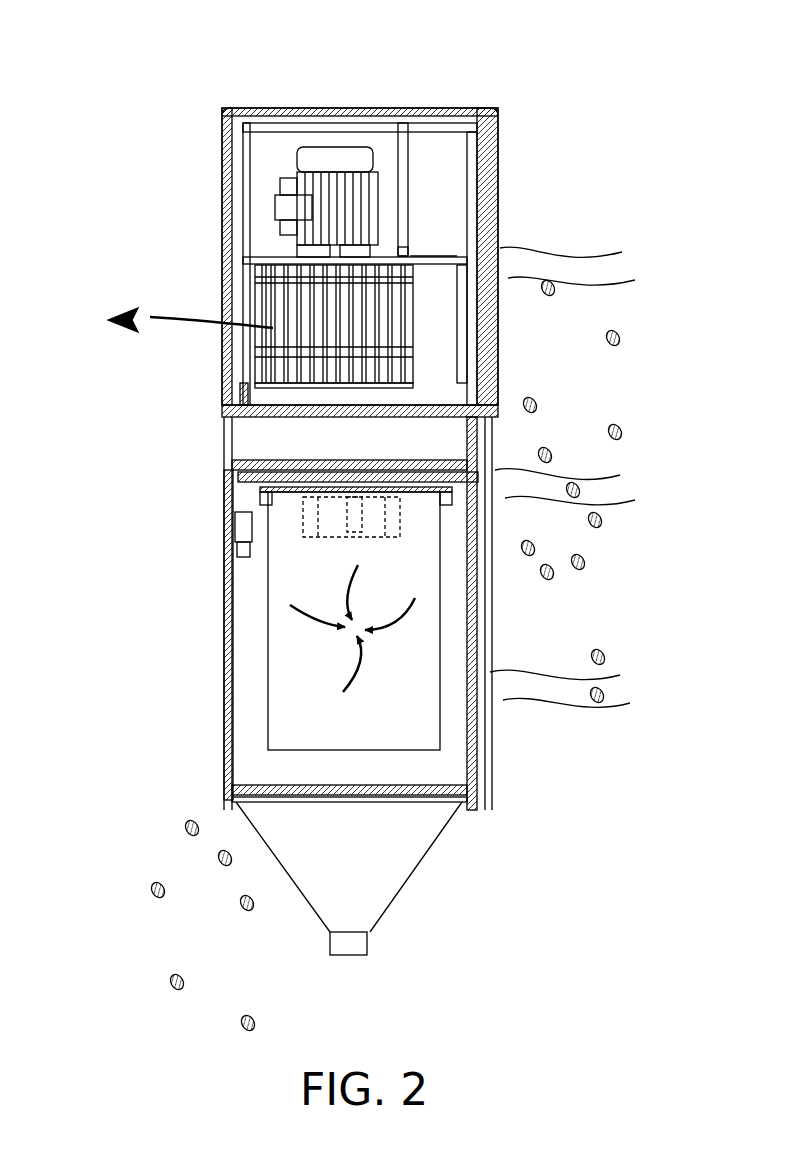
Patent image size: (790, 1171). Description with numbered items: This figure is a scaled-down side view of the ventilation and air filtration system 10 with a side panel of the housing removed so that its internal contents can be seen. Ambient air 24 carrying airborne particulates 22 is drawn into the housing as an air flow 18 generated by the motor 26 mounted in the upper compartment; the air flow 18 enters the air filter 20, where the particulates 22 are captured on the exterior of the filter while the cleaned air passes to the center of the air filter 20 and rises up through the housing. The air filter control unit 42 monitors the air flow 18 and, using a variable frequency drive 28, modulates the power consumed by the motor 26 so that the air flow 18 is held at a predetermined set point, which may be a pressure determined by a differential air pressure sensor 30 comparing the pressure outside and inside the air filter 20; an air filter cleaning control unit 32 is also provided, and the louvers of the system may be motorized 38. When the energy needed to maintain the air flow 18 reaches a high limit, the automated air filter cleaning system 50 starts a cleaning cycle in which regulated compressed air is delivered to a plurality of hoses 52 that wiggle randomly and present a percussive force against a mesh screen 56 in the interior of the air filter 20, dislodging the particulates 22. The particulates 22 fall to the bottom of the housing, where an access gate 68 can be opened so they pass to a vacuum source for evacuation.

The ventilation and air filtration system 10 is at (135, 52).
The air flow 18 is at (152, 316).
The air filter 20 is at (320, 742).
The particulates 22 is at (548, 445).
The ambient air 24 is at (530, 245).
The motor 26 is at (345, 150).
The variable frequency drive 28 is at (275, 208).
The differential air pressure sensor 30 is at (498, 168).
The air filter cleaning control unit 32 is at (445, 196).
The motorized 38 is at (235, 532).
The air filter control unit 42 is at (437, 257).
The automated air filter cleaning system 50 is at (418, 252).
The hoses 52 is at (325, 470).
The mesh screen 56 is at (305, 548).
The access gate 68 is at (365, 943).